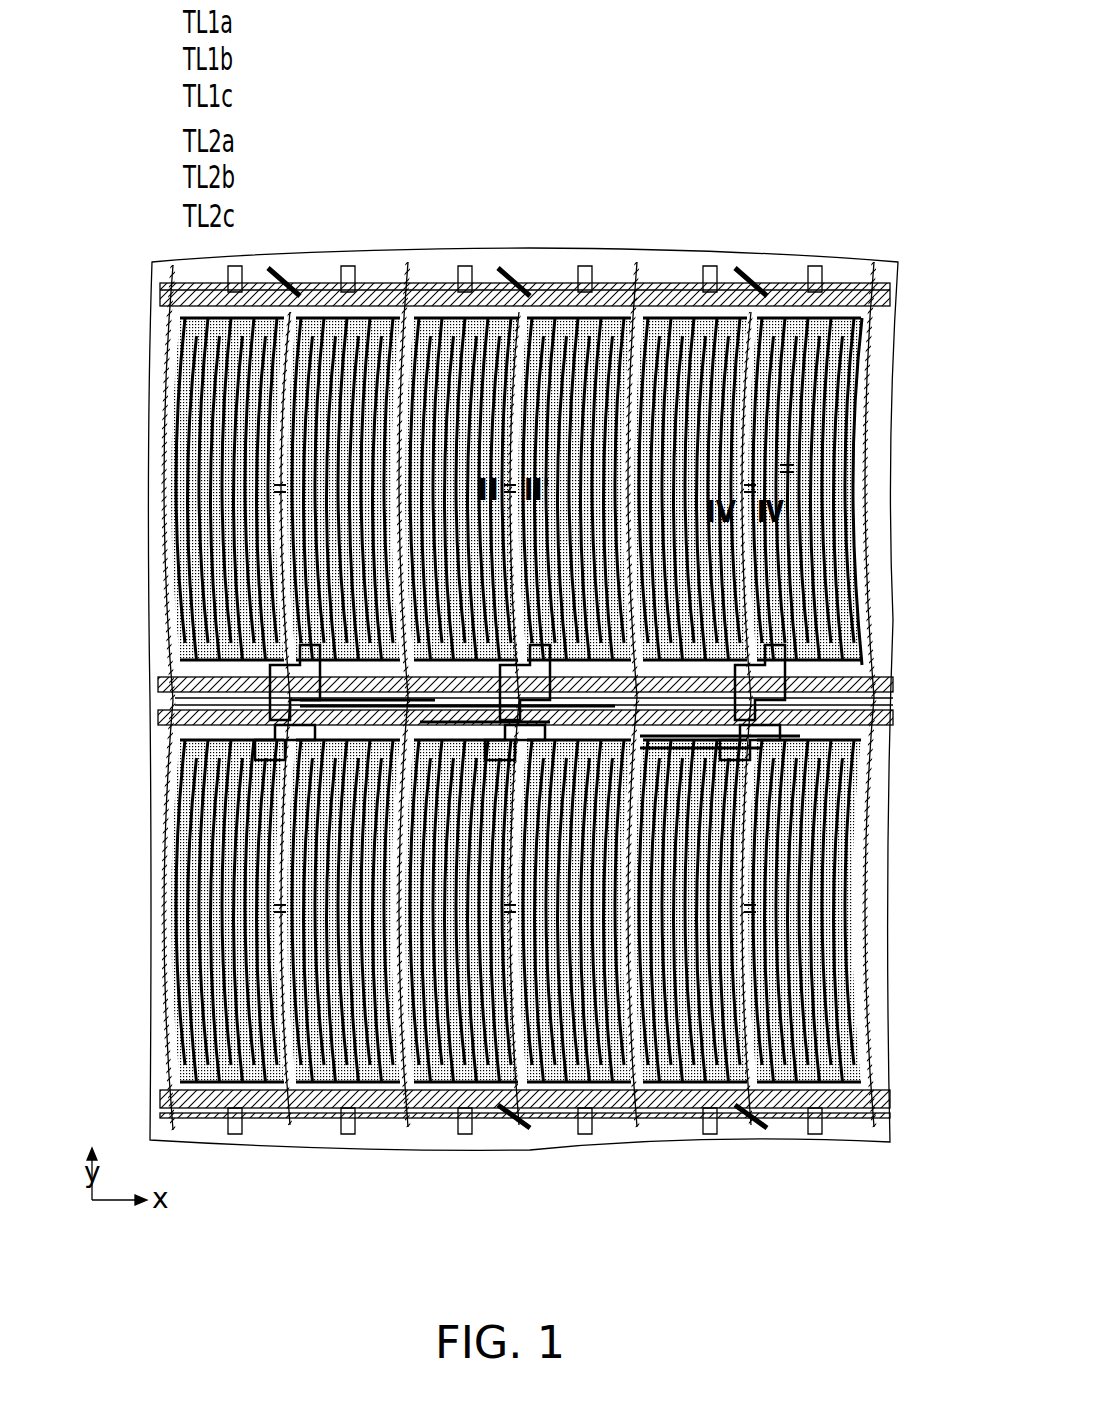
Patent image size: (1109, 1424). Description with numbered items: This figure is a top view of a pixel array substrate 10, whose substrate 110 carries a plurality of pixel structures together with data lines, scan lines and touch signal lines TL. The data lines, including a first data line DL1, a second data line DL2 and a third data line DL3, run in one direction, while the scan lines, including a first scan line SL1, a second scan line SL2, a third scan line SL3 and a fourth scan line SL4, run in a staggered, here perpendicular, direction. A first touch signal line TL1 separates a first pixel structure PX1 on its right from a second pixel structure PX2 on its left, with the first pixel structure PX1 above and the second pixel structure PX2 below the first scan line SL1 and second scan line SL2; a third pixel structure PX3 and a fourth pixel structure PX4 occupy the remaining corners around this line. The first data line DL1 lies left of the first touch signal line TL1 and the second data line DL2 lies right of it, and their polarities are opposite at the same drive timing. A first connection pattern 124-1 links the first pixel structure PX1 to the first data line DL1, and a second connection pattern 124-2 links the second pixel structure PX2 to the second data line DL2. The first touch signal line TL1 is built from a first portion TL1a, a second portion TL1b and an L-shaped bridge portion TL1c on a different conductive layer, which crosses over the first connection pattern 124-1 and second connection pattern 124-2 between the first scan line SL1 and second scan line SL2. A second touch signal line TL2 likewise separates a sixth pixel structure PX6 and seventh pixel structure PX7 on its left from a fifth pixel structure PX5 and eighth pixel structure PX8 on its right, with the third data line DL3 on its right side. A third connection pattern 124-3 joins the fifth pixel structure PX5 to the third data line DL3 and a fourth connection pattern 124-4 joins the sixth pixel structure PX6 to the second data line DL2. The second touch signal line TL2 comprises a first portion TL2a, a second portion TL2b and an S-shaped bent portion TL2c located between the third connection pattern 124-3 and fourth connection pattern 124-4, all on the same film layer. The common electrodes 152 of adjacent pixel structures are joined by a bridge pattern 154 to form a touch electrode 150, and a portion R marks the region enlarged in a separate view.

The pixel array substrate 10 is at (938, 1273).
The substrate 110 is at (152, 980).
The touch signal lines TL is at (112, 46).
The first touch signal line TL1 is at (175, 12).
The first portion of the first touch signal line TL1a is at (510, 415).
The second portion of the first touch signal line TL1b is at (486, 1128).
The bridge portion of the first touch signal line TL1c is at (612, 707).
The second touch signal line TL2 is at (175, 130).
The first portion of the second touch signal line TL2a is at (752, 415).
The second portion of the second touch signal line TL2b is at (720, 1128).
The bent portion of the second touch signal line TL2c is at (798, 738).
The first data line DL1 is at (408, 268).
The second data line DL2 is at (641, 268).
The third data line DL3 is at (878, 267).
The first scan line SL1 is at (943, 660).
The second scan line SL2 is at (892, 717).
The third scan line SL3 is at (882, 297).
The fourth scan line SL4 is at (882, 1100).
The first pixel structure PX1 is at (562, 283).
The second pixel structure PX2 is at (445, 1083).
The third pixel structure PX3 is at (442, 283).
The fourth pixel structure PX4 is at (606, 1083).
The fifth pixel structure PX5 is at (807, 1083).
The sixth pixel structure PX6 is at (710, 283).
The seventh pixel structure PX7 is at (672, 1083).
The eighth pixel structure PX8 is at (840, 283).
The first connection pattern 124-1 is at (432, 701).
The second connection pattern 124-2 is at (545, 722).
The third connection pattern 124-3 is at (865, 699).
The fourth connection pattern 124-4 is at (690, 750).
The touch electrode 150 is at (937, 420).
The common electrode 152 is at (860, 414).
The bridge pattern 154 is at (790, 469).
The portion R is at (500, 592).